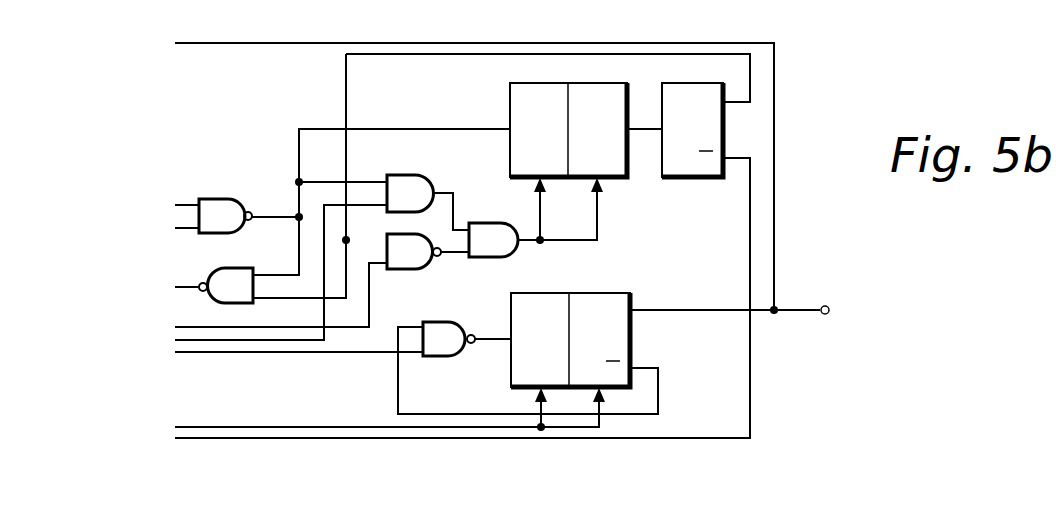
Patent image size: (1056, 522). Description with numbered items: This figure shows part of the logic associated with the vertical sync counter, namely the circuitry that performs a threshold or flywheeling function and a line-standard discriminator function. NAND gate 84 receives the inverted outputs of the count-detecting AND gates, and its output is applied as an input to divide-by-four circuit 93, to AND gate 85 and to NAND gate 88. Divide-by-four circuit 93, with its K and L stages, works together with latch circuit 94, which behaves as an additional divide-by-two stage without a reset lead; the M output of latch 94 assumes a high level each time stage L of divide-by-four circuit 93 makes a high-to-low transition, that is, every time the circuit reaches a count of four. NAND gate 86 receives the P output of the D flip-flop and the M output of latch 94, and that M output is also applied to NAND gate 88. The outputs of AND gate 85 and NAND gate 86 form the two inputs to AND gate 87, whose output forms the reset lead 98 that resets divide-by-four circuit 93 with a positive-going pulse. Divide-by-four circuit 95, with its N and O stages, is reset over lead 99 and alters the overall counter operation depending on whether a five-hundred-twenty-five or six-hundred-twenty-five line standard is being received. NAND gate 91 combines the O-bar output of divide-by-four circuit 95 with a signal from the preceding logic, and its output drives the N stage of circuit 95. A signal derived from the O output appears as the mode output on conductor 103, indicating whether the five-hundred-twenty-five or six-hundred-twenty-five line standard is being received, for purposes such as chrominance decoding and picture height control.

The NAND gate 84 is at (211, 198).
The AND gate 85 is at (411, 174).
The NAND gate 86 is at (403, 270).
The AND gate 87 is at (487, 258).
The NAND gate 88 is at (218, 303).
The NAND gate 91 is at (443, 321).
The divide-by-four circuit 93 is at (614, 84).
The latch circuit 94 is at (697, 84).
The divide-by-four circuit 95 is at (615, 295).
The reset lead 98 is at (568, 244).
The reset lead 99 is at (307, 427).
The conductor 103 is at (798, 313).